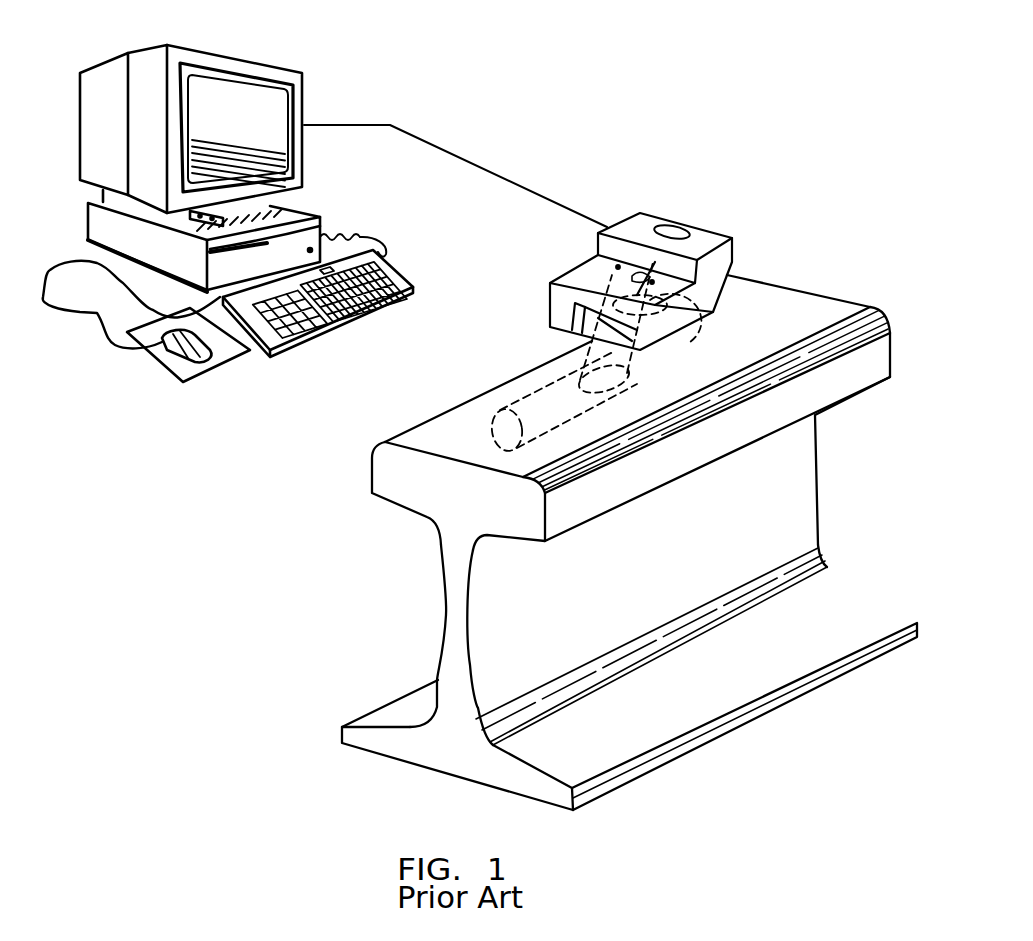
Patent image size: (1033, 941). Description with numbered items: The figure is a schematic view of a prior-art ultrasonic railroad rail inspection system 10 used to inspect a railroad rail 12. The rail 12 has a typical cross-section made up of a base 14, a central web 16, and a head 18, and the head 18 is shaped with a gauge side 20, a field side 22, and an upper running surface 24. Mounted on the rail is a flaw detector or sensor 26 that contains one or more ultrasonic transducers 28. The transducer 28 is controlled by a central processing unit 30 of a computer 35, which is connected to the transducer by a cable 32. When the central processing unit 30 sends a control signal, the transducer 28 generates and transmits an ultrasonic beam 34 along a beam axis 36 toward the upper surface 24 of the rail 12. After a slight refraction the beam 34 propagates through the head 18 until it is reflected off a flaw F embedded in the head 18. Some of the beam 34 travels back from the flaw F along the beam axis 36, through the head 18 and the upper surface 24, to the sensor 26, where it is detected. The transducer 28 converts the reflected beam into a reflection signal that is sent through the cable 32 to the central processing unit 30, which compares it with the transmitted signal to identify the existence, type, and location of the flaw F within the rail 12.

The ultrasonic railroad rail inspection system 10 is at (654, 100).
The railroad rail 12 is at (790, 488).
The base 14 is at (397, 707).
The central web 16 is at (452, 607).
The head 18 is at (393, 481).
The gauge side 20 is at (420, 422).
The field side 22 is at (573, 508).
The upper running surface 24 is at (790, 307).
The flaw detector or sensor 26 is at (628, 226).
The ultrasonic transducer 28 is at (657, 307).
The central processing unit 30 is at (304, 94).
The cable 32 is at (470, 162).
The ultrasonic beam 34 is at (640, 360).
The computer 35 is at (278, 128).
The beam axis 36 is at (593, 340).
The flaw F is at (492, 430).